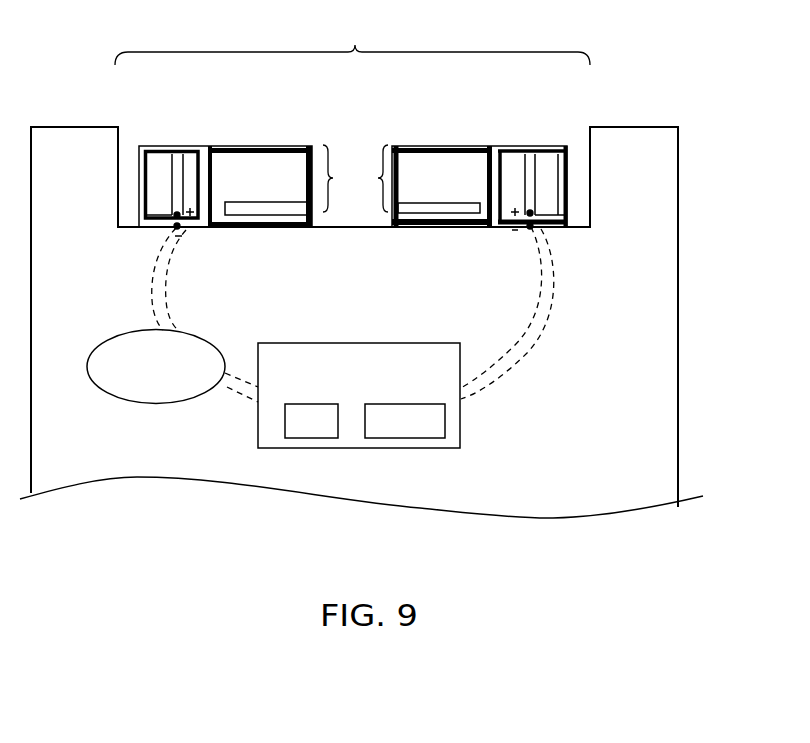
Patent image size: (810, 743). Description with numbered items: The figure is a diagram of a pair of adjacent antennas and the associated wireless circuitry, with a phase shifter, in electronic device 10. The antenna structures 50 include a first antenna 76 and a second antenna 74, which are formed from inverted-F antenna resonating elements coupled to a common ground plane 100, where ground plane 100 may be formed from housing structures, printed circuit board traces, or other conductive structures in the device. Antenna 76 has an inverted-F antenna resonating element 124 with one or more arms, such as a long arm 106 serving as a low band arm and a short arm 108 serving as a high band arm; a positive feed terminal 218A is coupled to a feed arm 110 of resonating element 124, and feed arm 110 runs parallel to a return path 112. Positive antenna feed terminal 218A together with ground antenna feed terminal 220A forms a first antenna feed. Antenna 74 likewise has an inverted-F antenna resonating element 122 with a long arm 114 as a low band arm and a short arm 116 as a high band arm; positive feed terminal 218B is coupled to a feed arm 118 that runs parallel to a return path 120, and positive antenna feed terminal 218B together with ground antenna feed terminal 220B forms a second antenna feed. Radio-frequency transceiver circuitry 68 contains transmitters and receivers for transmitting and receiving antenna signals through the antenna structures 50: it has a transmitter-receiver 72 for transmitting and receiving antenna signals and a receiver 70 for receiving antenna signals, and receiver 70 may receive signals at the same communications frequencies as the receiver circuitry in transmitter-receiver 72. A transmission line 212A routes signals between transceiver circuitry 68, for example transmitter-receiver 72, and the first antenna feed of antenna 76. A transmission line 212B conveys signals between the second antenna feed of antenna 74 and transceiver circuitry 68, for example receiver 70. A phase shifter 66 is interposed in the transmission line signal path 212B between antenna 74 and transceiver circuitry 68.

The electronic device 10 is at (710, 117).
The ground plane 100 is at (553, 497).
The antenna structures 50 is at (352, 44).
The antenna 74 is at (195, 171).
The antenna 76 is at (516, 158).
The short arm 116 is at (139, 175).
The feed arm 118 is at (183, 154).
The return path 120 is at (215, 171).
The long arm 114 is at (286, 213).
The inverted-F antenna resonating element 122 is at (333, 178).
The inverted-F antenna resonating element 124 is at (378, 178).
The long arm 106 is at (443, 150).
The return path 112 is at (502, 186).
The feed arm 110 is at (535, 187).
The short arm 108 is at (567, 172).
The positive antenna feed terminal 218B is at (175, 217).
The ground antenna feed terminal 220B is at (179, 227).
The positive antenna feed terminal 218A is at (532, 213).
The ground antenna feed terminal 220A is at (528, 227).
The transmission line 212B is at (184, 295).
The transmission line 212A is at (521, 391).
The phase shifter 66 is at (142, 403).
The radio-frequency transceiver circuitry 68 is at (359, 421).
The receiver 70 is at (320, 438).
The transmitter-receiver 72 is at (405, 438).